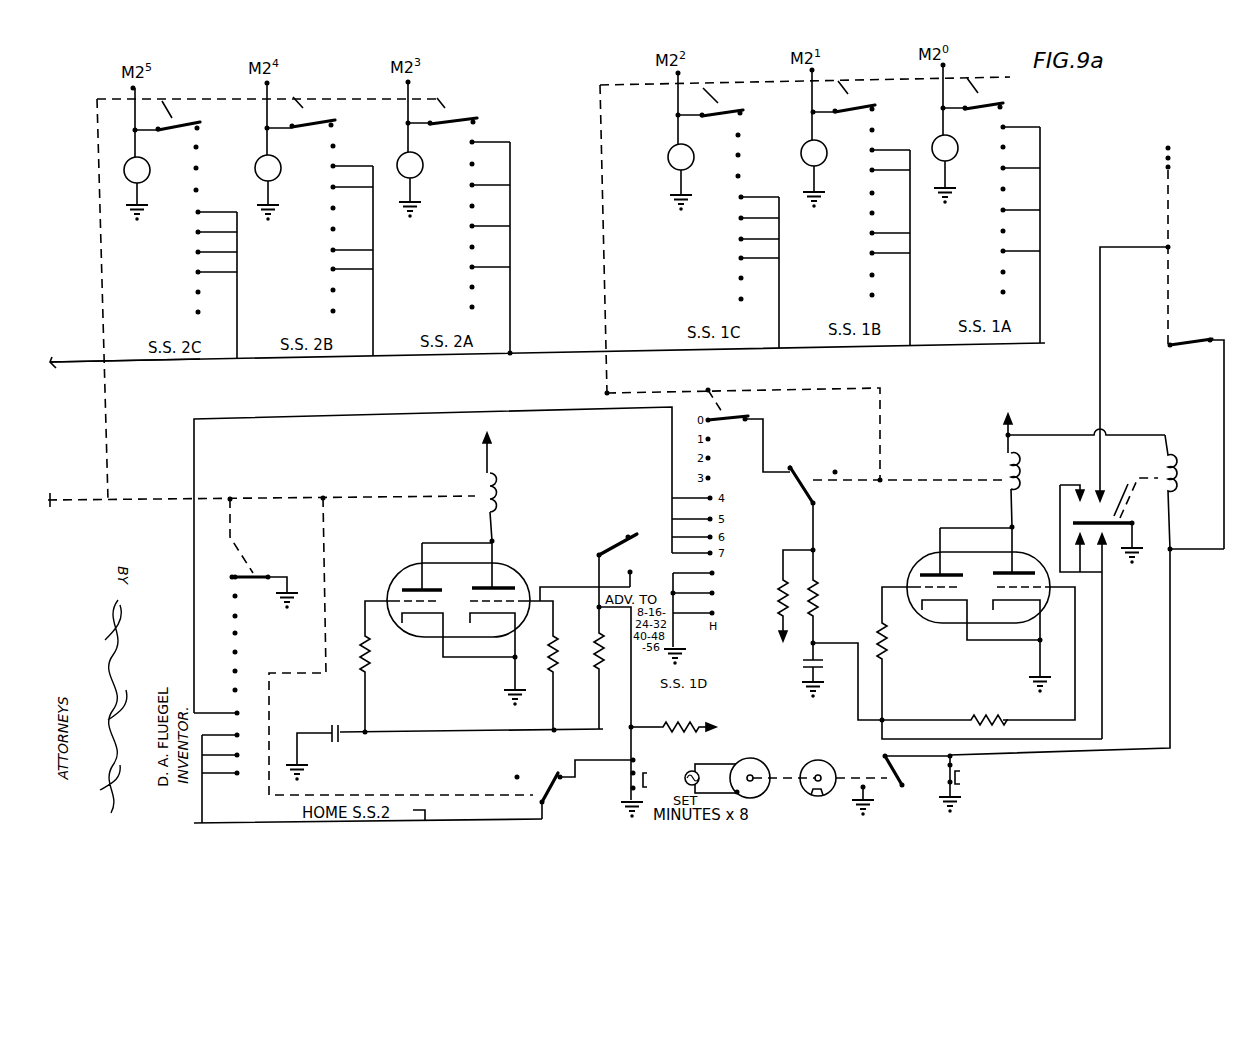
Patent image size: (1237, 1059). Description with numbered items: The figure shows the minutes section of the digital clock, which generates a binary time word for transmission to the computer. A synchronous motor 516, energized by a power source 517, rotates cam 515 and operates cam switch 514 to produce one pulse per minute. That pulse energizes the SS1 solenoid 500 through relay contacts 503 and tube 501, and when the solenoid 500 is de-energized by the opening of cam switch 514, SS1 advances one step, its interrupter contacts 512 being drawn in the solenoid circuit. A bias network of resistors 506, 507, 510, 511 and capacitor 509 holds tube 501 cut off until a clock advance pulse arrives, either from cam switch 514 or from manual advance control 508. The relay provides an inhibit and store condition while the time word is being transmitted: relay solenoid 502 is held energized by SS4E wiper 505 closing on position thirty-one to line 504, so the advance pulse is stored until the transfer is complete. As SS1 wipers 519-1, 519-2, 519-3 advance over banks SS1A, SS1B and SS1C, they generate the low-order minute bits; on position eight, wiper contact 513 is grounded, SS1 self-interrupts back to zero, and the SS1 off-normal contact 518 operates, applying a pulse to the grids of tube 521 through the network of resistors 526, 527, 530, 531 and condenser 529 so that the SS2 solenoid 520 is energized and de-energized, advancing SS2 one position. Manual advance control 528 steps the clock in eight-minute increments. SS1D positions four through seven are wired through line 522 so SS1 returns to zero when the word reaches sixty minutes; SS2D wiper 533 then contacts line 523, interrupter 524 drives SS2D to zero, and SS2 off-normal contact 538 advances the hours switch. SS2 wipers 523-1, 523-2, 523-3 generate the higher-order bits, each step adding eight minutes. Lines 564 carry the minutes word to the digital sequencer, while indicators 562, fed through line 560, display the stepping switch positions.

The SS1 solenoid 500 is at (1018, 460).
The tube 501 is at (917, 568).
The relay solenoid 502 is at (1172, 444).
The relay contacts 503 is at (1122, 482).
The line 504 is at (1102, 273).
The SS4E wiper 505 is at (1212, 339).
The resistor 506 is at (890, 640).
The resistor 507 is at (998, 716).
The manual advance control 508 is at (960, 773).
The capacitor 509 is at (808, 682).
The resistor 510 is at (782, 601).
The resistor 511 is at (819, 597).
The S.S.1 interrupter contacts 512 is at (800, 492).
The wiper contact 513 is at (737, 415).
The cam switch 514 is at (895, 766).
The cam 515 is at (812, 792).
The synchronous motor 516 is at (754, 766).
The power source 517 is at (699, 762).
The SS1 off-normal contact 518 is at (599, 546).
The SS1 wiper 519-1 is at (738, 116).
The SS1 wiper 519-2 is at (872, 111).
The SS1 wiper 519-3 is at (1002, 106).
The S.S.2 stepping switch magnet coil 520 is at (494, 449).
The tube 521 is at (408, 559).
The line 522 is at (440, 411).
The line 523 is at (197, 742).
The SS2 wiper 523-1 is at (194, 128).
The SS2 wiper 523-2 is at (330, 128).
The SS2 wiper 523-3 is at (470, 124).
The interrupter 524 is at (537, 796).
The resistor 526 is at (345, 682).
The resistor 527 is at (461, 682).
The manual advance control 528 is at (649, 777).
The condenser 529 is at (338, 741).
The resistor 530 is at (667, 721).
The resistor 531 is at (597, 668).
The SS2D wiper 533 is at (255, 576).
The SS2 off-normal contact 538 is at (155, 503).
The line 560 is at (97, 365).
The indicators 562 is at (147, 172).
The lines 564 is at (143, 101).